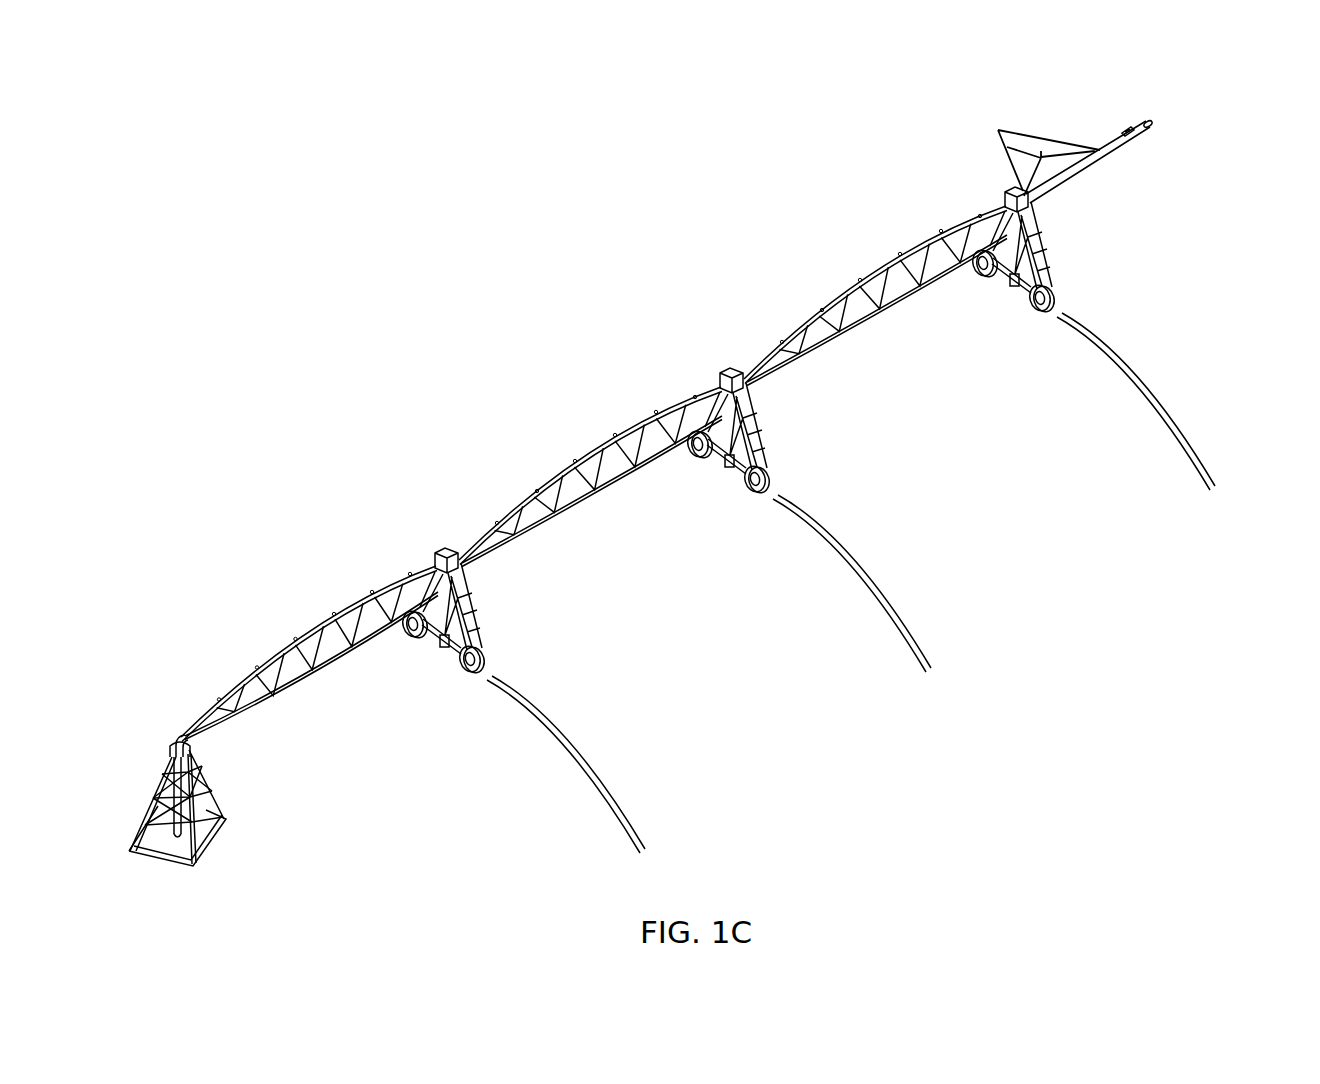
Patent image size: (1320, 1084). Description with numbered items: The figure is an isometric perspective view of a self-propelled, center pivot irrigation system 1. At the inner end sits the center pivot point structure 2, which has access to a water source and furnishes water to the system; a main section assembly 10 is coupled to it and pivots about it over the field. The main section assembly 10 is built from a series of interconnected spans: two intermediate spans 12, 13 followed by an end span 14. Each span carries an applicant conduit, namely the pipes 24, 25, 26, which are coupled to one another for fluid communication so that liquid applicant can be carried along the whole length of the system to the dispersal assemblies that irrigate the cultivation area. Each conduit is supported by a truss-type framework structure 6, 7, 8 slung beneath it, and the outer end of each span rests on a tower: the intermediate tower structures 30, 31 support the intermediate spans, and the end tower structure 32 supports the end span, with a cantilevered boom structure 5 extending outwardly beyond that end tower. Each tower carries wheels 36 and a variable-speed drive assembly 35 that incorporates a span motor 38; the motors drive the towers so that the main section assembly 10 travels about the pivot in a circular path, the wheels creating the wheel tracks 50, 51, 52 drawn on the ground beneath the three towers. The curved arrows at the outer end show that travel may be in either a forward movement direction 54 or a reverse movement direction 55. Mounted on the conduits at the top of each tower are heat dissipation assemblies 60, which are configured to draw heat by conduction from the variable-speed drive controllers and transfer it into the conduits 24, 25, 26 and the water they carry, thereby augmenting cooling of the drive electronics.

The irrigation system 1 is at (428, 345).
The center pivot point structure 2 is at (147, 776).
The cantilevered boom structure 5 is at (1103, 135).
The truss-type framework structure 6 is at (314, 677).
The truss-type framework structure 7 is at (600, 495).
The truss-type framework structure 8 is at (884, 292).
The main section assembly 10 is at (217, 650).
The intermediate span 12 is at (298, 640).
The intermediate span 13 is at (583, 458).
The end span 14 is at (868, 278).
The applicant conduit 24 is at (317, 627).
The applicant conduit 25 is at (602, 447).
The applicant conduit 26 is at (886, 268).
The intermediate tower structure 30 is at (477, 593).
The intermediate tower structure 31 is at (762, 413).
The end tower structure 32 is at (1047, 232).
The variable-speed drive assembly 35 is at (438, 682).
The wheels 36 is at (471, 672).
The span motor 38 is at (445, 642).
The wheel track 50 is at (587, 768).
The wheel track 51 is at (872, 583).
The wheel track 52 is at (1154, 401).
The forward movement direction 54 is at (1280, 116).
The reverse movement direction 55 is at (1277, 73).
The heat dissipation assembly 60 is at (448, 550).